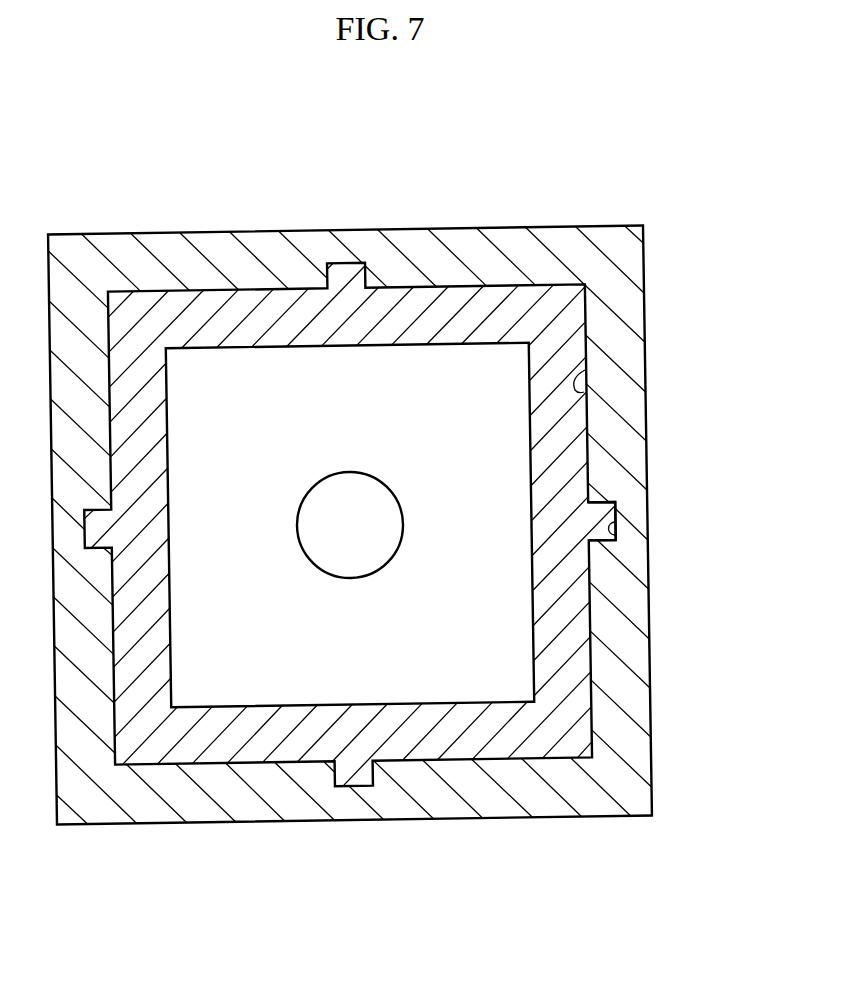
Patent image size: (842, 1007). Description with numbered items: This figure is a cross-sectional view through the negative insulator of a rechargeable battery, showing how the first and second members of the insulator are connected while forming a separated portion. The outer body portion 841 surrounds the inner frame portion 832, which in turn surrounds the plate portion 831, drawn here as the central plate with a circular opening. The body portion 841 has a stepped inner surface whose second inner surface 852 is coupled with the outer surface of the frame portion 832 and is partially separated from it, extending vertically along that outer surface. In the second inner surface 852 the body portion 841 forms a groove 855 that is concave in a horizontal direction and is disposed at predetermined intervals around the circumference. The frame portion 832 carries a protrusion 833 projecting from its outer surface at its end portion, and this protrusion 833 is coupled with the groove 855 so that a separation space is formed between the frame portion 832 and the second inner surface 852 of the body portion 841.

The body portion 841 is at (563, 239).
The frame portion 832 is at (572, 645).
The plate portion 831 is at (423, 673).
The protrusion 833 is at (603, 514).
The groove 855 is at (620, 537).
The second inner surface 852 is at (586, 371).